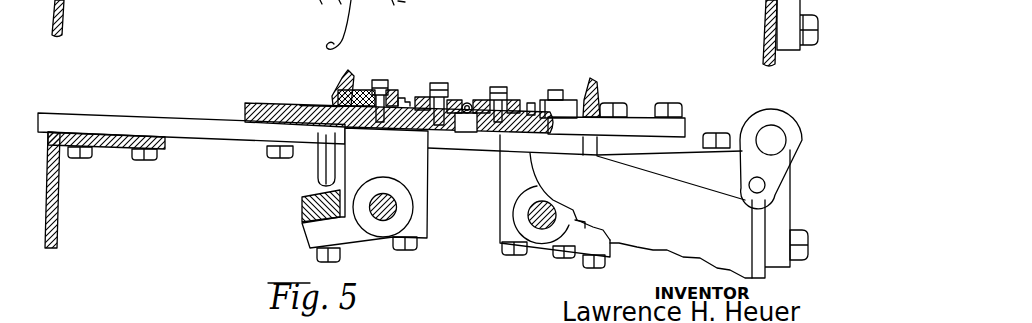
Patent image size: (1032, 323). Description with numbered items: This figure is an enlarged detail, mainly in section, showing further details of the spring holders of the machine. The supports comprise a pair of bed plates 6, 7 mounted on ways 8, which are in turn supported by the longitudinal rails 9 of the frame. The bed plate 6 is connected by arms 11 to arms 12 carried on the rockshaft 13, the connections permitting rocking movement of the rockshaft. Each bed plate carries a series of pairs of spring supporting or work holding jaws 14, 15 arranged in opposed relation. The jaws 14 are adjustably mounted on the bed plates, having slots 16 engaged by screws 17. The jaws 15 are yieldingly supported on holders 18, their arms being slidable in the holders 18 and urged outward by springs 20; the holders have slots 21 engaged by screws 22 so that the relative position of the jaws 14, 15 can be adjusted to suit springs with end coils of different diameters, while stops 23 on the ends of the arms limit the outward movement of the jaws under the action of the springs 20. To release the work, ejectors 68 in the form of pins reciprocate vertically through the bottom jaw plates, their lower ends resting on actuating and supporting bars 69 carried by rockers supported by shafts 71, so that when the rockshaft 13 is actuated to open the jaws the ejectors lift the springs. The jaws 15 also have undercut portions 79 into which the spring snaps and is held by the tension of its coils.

The bed plate 6 is at (644, 128).
The bed plate 7 is at (255, 105).
The ways 8 is at (212, 135).
The longitudinal rails 9 is at (104, 150).
The arms 11 is at (649, 163).
The arms 12 is at (745, 178).
The rockshaft 13 is at (766, 135).
The jaws 14 is at (472, 103).
The jaws 15 is at (596, 90).
The slots 16 is at (452, 100).
The screws 17 is at (503, 87).
The holders 18 is at (570, 92).
The springs 20 is at (347, 92).
The slots 21 is at (389, 126).
The screws 22 is at (441, 83).
The stops 23 is at (533, 103).
The ejectors 68 is at (325, 171).
The actuating and supporting bars 69 is at (305, 205).
The shafts 71 is at (480, 202).
The undercut portions 79 is at (332, 100).